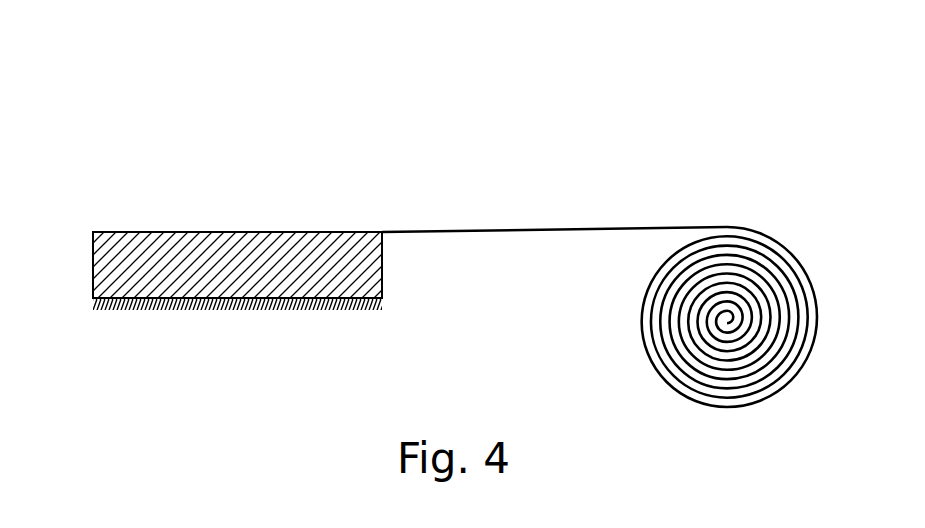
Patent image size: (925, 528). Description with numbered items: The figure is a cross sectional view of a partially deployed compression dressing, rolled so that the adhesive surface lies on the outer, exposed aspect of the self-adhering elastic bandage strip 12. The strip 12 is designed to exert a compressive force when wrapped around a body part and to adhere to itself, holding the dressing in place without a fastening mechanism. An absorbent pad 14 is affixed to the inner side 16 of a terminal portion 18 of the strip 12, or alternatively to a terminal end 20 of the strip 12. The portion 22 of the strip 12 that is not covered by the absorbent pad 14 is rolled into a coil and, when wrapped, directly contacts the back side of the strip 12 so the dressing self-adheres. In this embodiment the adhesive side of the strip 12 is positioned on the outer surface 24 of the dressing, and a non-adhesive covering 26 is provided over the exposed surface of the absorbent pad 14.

The self-adhering elastic bandage strip 12 is at (822, 194).
The absorbent pad 14 is at (101, 274).
The inner side 16 is at (443, 240).
The terminal portion 18 is at (785, 95).
The terminal end 20 is at (378, 207).
The portion of strip not covered by absorbent pad 22 is at (755, 411).
The outer surface 24 is at (502, 227).
The non-adhesive covering 26 is at (210, 318).